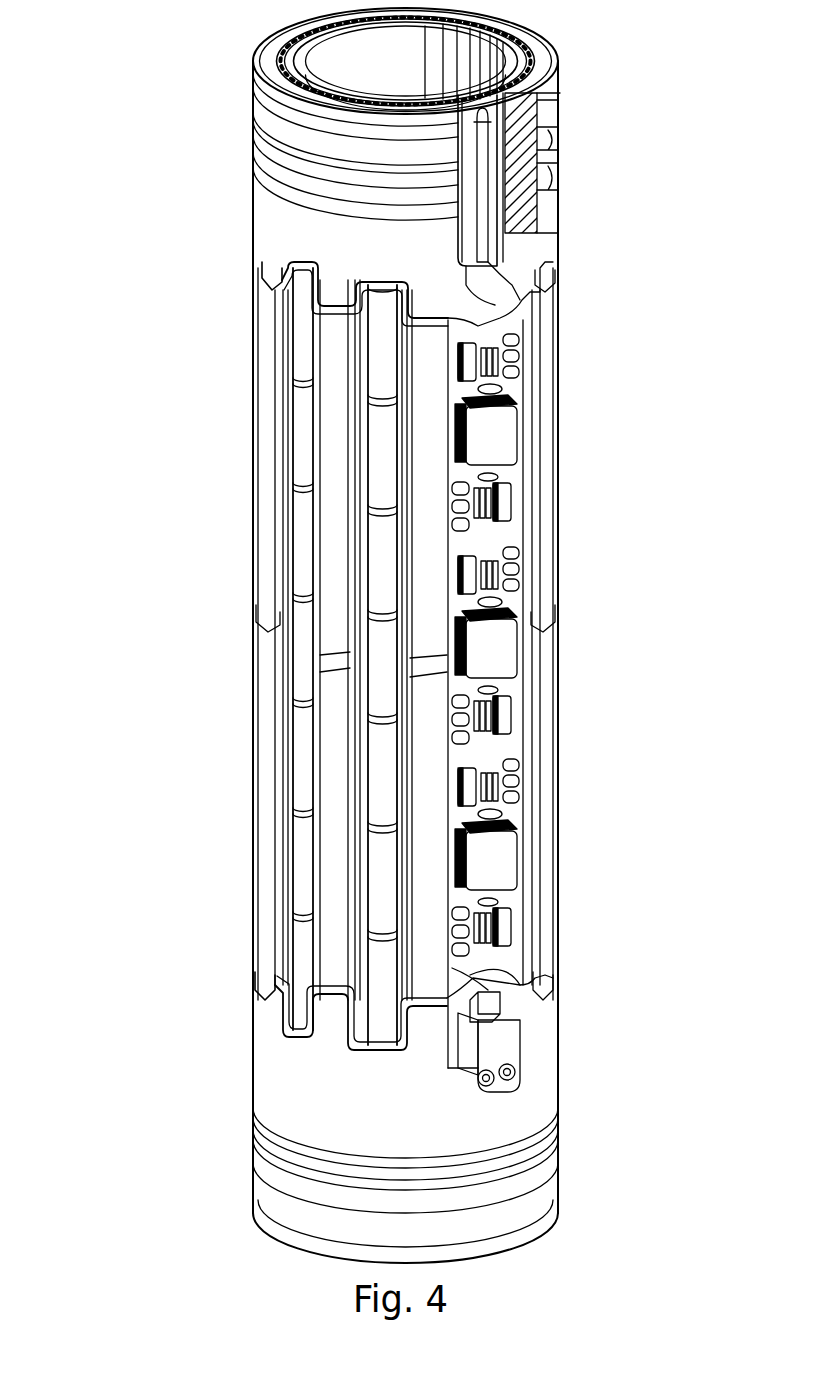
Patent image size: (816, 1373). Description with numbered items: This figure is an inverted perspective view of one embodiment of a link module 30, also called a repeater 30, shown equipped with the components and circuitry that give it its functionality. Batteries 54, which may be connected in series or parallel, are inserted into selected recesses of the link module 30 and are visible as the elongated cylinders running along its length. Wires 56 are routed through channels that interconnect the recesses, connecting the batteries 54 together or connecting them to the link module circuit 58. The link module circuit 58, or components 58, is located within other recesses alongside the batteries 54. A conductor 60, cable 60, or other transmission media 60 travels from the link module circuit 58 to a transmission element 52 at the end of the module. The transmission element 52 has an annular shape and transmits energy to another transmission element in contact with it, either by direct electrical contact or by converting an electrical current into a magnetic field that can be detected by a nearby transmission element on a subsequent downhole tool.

The link module 30 is at (160, 172).
The transmission element 52 is at (507, 37).
The batteries 54 is at (383, 347).
The wires 56 is at (262, 285).
The link module circuit 58 is at (500, 643).
The conductor 60 is at (540, 258).